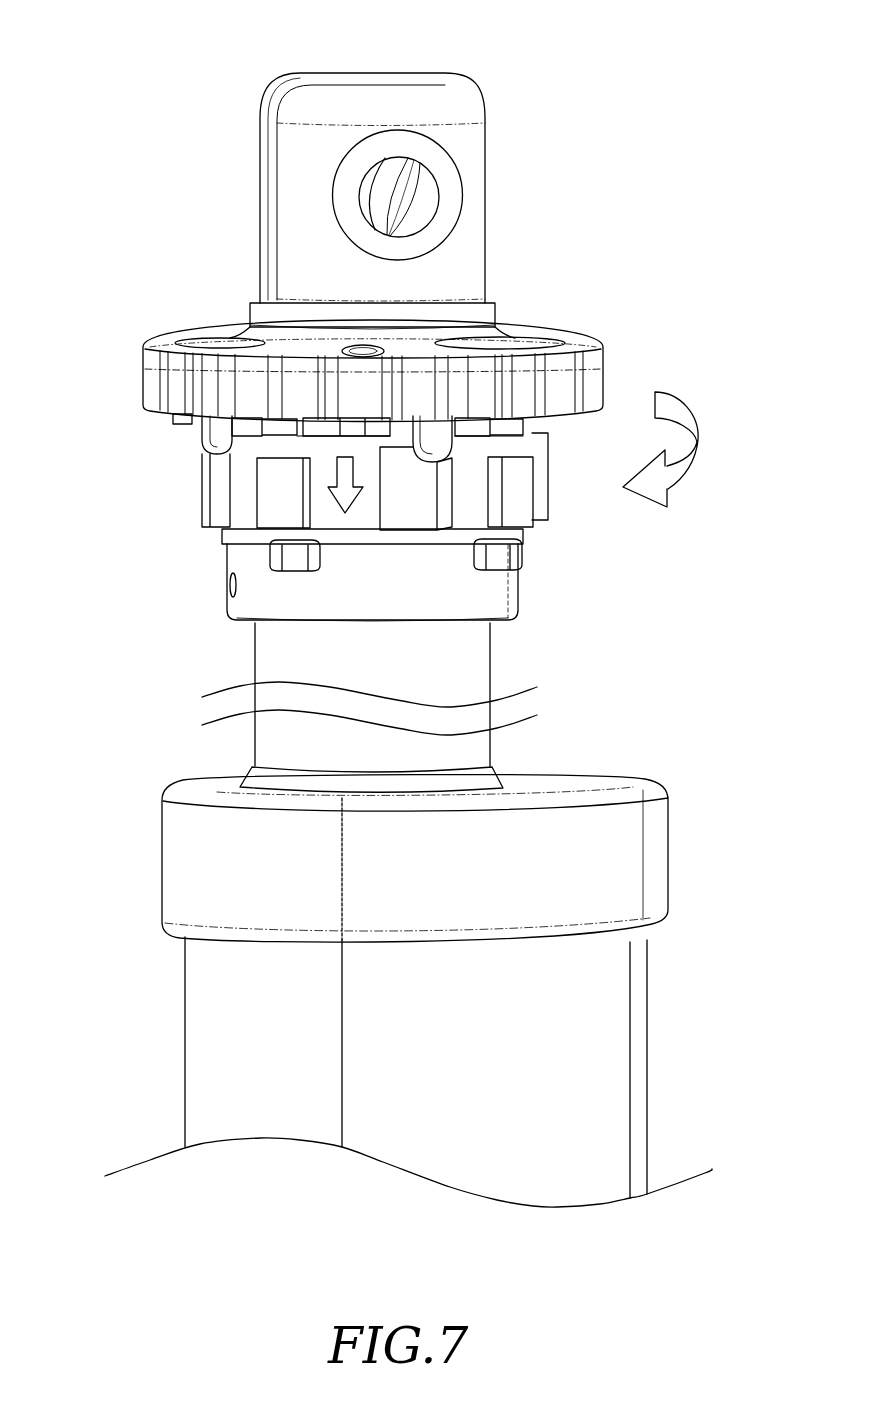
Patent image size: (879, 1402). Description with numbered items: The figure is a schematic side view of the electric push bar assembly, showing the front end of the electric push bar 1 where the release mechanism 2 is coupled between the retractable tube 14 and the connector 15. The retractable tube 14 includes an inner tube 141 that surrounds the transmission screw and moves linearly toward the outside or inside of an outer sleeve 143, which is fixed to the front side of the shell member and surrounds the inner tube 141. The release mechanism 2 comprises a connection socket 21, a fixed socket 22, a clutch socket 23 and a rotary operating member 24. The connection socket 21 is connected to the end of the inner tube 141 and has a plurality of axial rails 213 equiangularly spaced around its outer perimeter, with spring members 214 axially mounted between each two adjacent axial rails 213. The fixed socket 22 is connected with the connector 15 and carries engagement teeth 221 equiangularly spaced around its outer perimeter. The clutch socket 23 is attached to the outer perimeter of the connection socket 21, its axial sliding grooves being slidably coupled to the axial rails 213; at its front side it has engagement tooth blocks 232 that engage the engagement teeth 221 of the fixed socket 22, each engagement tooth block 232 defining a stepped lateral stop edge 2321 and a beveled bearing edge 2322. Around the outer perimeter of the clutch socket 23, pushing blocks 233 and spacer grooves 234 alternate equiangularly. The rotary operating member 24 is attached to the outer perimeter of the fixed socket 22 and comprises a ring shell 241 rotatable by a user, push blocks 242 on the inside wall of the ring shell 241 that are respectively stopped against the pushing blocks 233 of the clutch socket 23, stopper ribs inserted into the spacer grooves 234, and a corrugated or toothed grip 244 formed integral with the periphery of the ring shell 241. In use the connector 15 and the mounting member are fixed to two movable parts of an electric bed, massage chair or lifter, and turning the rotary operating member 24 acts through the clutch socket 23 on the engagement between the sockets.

The electric push bar 1 is at (705, 812).
The retractable tube 14 is at (427, 1072).
The inner tube 141 is at (473, 655).
The outer sleeve 143 is at (615, 1017).
The connector 15 is at (293, 226).
The release mechanism 2 is at (446, 534).
The connection socket 21 is at (505, 590).
The axial rails 213 is at (408, 535).
The spring members 214 is at (462, 540).
The fixed socket 22 is at (283, 305).
The engagement teeth 221 is at (297, 437).
The clutch socket 23 is at (292, 497).
The engagement tooth blocks 232 is at (280, 446).
The stepped lateral stop edge 2321 is at (275, 428).
The beveled bearing edge 2322 is at (305, 434).
The pushing blocks 233 is at (270, 508).
The spacer grooves 234 is at (237, 493).
The rotary operating member 24 is at (420, 399).
The ring shell 241 is at (523, 340).
The push blocks 242 is at (438, 440).
The corrugated grip 244 is at (585, 372).